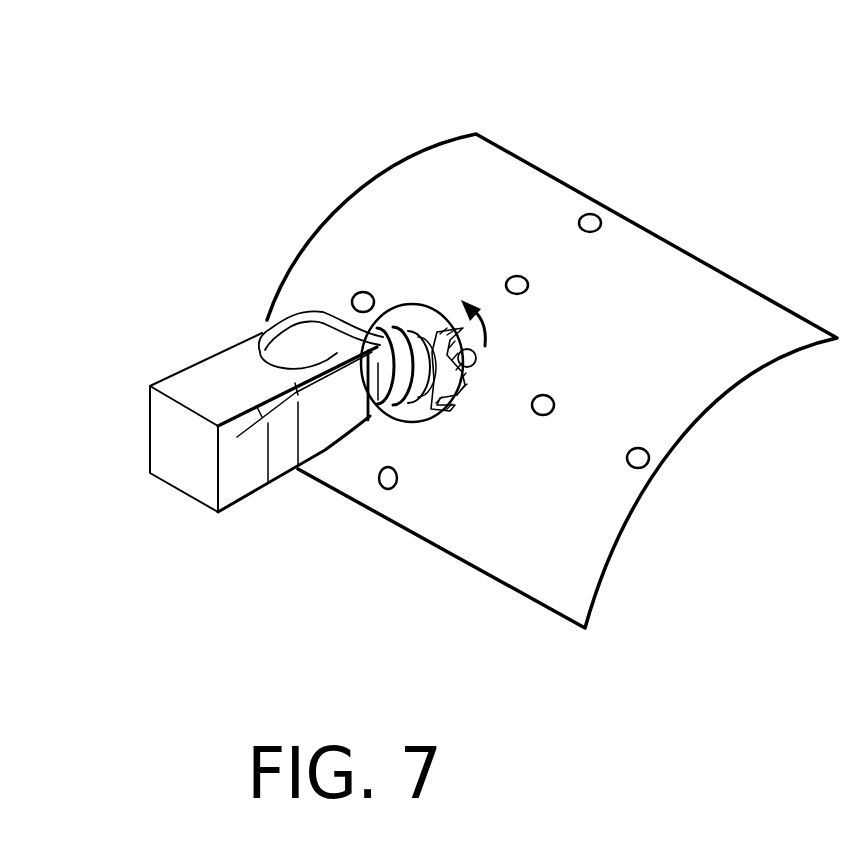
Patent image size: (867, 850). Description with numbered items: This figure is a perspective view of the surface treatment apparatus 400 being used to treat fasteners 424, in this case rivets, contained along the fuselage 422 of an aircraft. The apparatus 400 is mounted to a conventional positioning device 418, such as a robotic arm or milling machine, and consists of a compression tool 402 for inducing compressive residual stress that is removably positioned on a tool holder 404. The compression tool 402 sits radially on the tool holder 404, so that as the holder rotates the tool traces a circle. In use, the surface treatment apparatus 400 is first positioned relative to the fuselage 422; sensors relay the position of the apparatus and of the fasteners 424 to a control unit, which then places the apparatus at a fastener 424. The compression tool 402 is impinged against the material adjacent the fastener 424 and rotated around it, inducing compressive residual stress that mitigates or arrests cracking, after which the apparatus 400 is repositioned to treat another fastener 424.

The surface treatment apparatus 400 is at (354, 399).
The compression tool 402 is at (470, 384).
The tool holder 404 is at (428, 421).
The positioning device 418 is at (220, 382).
The fuselage 422 is at (483, 173).
The fasteners 424 is at (546, 398).